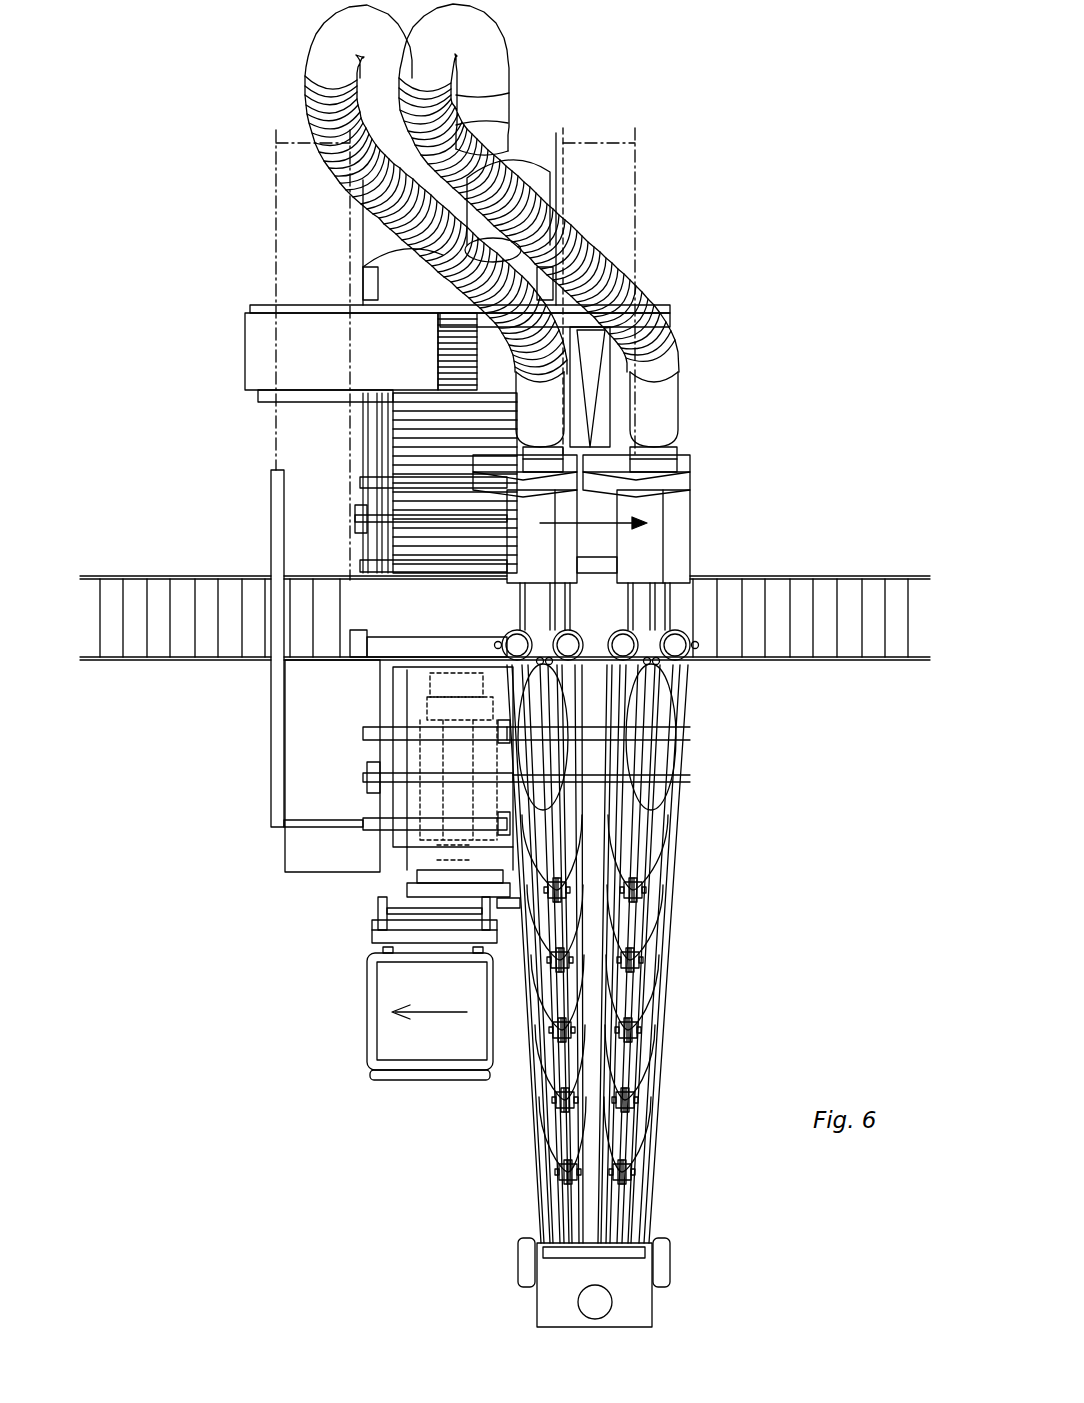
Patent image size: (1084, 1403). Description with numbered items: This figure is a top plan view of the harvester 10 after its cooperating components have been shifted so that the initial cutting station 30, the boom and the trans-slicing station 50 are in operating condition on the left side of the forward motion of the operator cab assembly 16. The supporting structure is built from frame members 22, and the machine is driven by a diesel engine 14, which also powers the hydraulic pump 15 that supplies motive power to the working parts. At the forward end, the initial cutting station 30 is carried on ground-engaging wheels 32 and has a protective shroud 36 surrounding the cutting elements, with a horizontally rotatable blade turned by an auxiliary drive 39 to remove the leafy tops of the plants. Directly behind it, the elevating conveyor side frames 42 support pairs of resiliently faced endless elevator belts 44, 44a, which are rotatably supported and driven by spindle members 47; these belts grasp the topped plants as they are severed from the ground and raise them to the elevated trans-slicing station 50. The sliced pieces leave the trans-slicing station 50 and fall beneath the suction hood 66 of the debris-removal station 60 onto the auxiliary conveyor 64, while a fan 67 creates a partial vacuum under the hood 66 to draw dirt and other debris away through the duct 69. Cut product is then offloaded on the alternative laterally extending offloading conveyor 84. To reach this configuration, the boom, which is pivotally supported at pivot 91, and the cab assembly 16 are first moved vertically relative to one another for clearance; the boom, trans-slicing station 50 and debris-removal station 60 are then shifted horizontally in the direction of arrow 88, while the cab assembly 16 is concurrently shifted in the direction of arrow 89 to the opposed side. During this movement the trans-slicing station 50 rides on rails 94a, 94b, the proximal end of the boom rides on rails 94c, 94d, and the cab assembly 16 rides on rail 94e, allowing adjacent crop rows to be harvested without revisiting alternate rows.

The harvester 10 is at (225, 1033).
The diesel engine 14 is at (437, 840).
The hydraulic pump 15 is at (430, 770).
The operator cab assembly 16 is at (394, 1039).
The frame members 22 is at (277, 783).
The initial cutting station 30 is at (587, 1297).
The ground-engaging wheels 32 is at (667, 1252).
The protective shroud 36 is at (640, 1311).
The auxiliary drive 39 is at (595, 1305).
The elevating conveyor side frames 42 is at (682, 881).
The elevator belt 44 is at (535, 1196).
The elevator belt 44a is at (605, 1140).
The spindle members 47 is at (677, 640).
The trans-slicing station 50 is at (694, 510).
The debris-removal station 60 is at (637, 399).
The auxiliary conveyor 64 is at (258, 345).
The suction hood 66 is at (622, 400).
The fan 67 is at (527, 175).
The duct 69 is at (483, 46).
The offloading conveyor 84 is at (130, 600).
The arrow 88 is at (680, 468).
The arrow 89 is at (430, 1018).
The pivot 91 is at (600, 736).
The rail 94a is at (358, 483).
The rail 94b is at (365, 565).
The rail 94c is at (370, 733).
The rail 94d is at (373, 828).
The rail 94e is at (511, 908).